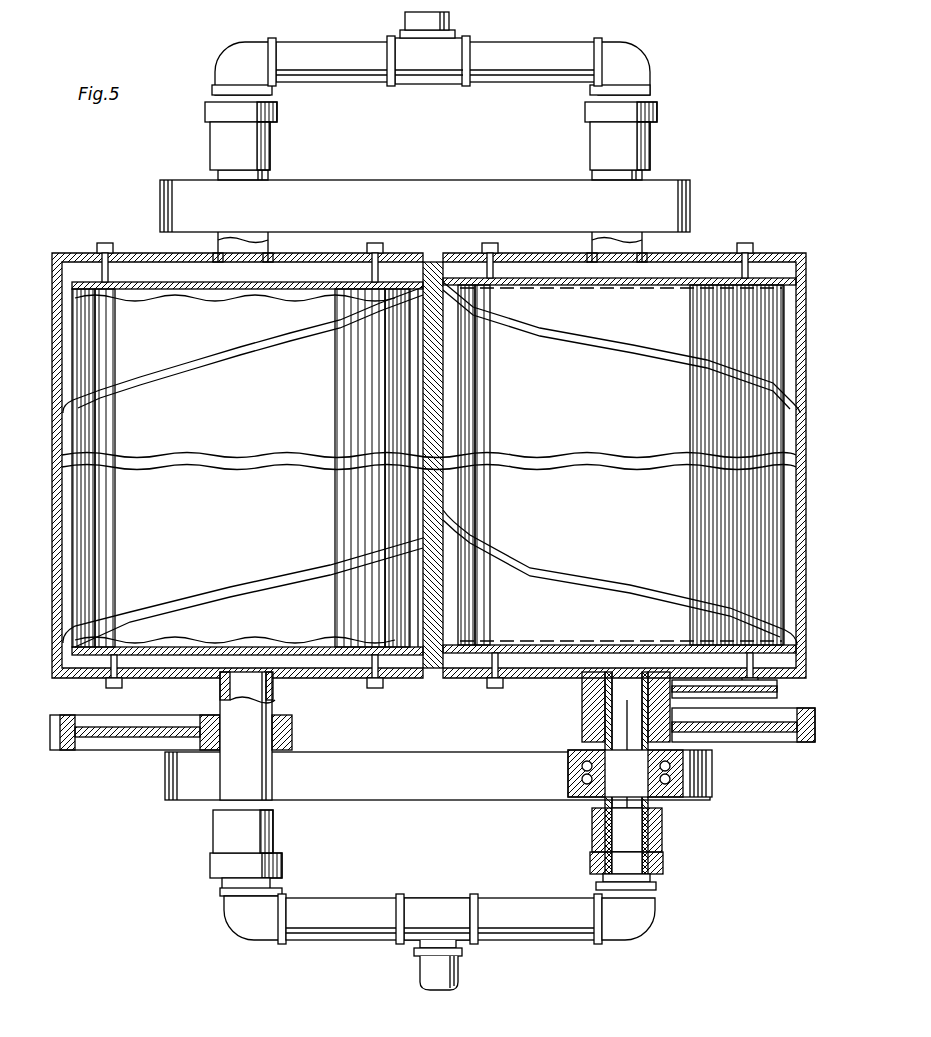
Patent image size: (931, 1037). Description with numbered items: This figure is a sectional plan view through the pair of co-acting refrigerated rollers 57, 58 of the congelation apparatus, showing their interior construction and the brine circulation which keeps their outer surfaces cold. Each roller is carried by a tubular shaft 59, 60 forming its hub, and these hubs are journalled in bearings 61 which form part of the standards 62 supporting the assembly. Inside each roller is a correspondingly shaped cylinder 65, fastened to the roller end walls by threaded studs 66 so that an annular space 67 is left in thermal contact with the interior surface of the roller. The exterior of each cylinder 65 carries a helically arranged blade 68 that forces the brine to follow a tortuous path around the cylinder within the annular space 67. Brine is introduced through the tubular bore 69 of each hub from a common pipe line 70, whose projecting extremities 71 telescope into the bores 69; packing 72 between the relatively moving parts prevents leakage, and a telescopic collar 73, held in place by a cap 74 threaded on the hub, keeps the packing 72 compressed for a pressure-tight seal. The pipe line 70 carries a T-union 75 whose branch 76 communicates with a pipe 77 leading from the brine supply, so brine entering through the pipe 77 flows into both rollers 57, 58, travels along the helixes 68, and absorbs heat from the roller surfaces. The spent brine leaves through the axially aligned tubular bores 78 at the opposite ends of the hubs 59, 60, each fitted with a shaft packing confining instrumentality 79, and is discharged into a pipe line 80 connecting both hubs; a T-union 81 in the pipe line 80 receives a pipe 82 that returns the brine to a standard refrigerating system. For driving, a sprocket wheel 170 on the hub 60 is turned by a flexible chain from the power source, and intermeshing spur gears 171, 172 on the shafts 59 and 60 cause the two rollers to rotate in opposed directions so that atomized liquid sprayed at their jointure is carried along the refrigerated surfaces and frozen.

The roller 57 is at (58, 272).
The roller 58 is at (806, 262).
The tubular shaft 59 is at (258, 252).
The tubular shaft 60 is at (642, 252).
The bearings 61 is at (585, 798).
The standards 62 is at (440, 188).
The cylinder 65 is at (124, 282).
The threaded studs 66 is at (104, 250).
The annular space 67 is at (67, 442).
The helically arranged blade 68 is at (246, 352).
The tubular bore 69 is at (232, 675).
The pipe line 70 is at (336, 930).
The projecting extremities 71 is at (592, 836).
The packing 72 is at (660, 800).
The telescopic collar 73 is at (590, 862).
The cap 74 is at (215, 835).
The T-union 75 is at (428, 912).
The branch 76 is at (458, 960).
The pipe 77 is at (435, 985).
The tubular bore 78 is at (220, 176).
The shaft packing confining instrumentality 79 is at (212, 135).
The pipe line 80 is at (326, 78).
The T-union 81 is at (410, 52).
The pipe 82 is at (450, 20).
The sprocket wheel 170 is at (752, 700).
The spur gear 171 is at (62, 750).
The spur gear 172 is at (811, 745).